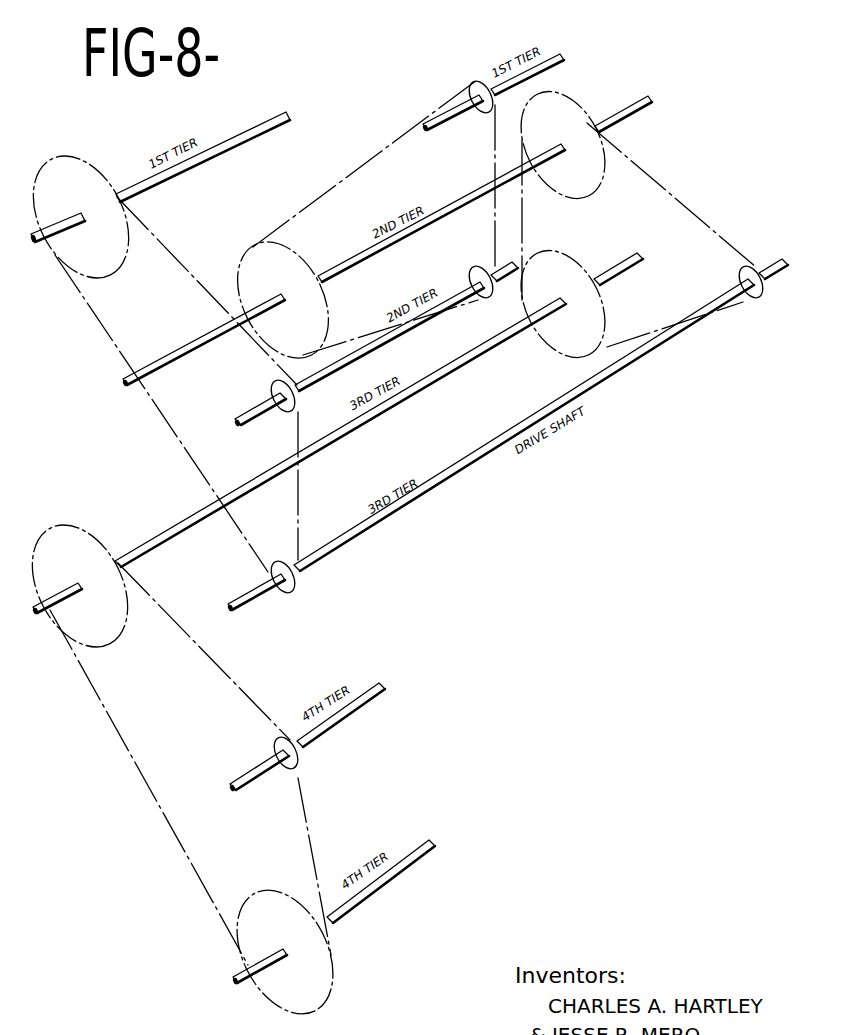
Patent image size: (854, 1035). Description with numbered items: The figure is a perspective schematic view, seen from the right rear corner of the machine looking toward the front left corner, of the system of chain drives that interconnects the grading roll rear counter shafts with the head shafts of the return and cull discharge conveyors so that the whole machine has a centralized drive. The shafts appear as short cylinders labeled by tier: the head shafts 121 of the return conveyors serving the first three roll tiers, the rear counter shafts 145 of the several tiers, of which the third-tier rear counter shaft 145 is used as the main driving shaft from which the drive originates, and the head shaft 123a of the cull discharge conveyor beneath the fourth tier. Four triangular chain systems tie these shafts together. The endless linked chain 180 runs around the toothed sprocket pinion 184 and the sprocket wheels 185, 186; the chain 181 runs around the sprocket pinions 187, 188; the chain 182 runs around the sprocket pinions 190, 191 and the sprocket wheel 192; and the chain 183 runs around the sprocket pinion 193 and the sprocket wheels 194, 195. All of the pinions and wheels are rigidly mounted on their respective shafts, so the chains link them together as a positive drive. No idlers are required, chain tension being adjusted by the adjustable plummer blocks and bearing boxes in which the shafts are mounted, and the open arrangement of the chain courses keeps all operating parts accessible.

The head shaft 121 is at (291, 119).
The rear counter shaft 145 is at (566, 57).
The head shaft 123a is at (435, 845).
The endless linked chain 180 is at (688, 213).
The endless linked chain 181 is at (184, 268).
The endless linked chain 182 is at (403, 137).
The endless linked chain 183 is at (245, 690).
The toothed sprocket pinion 184 is at (741, 282).
The toothed sprocket wheel 185 is at (604, 190).
The toothed sprocket wheel 186 is at (604, 318).
The toothed sprocket pinion 187 is at (272, 558).
The toothed sprocket pinion 188 is at (283, 414).
The toothed sprocket pinion 190 is at (470, 273).
The toothed sprocket pinion 191 is at (478, 112).
The toothed sprocket wheel 192 is at (296, 262).
The toothed sprocket pinion 193 is at (272, 750).
The toothed sprocket wheel 194 is at (127, 620).
The toothed sprocket wheel 195 is at (265, 890).